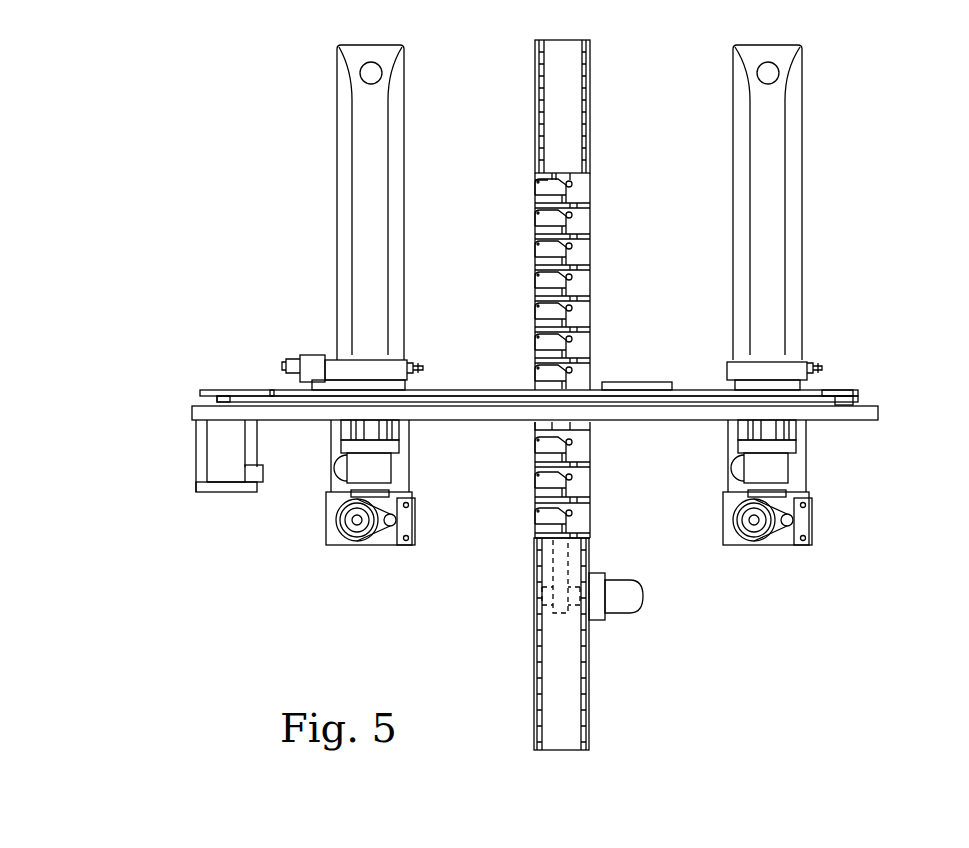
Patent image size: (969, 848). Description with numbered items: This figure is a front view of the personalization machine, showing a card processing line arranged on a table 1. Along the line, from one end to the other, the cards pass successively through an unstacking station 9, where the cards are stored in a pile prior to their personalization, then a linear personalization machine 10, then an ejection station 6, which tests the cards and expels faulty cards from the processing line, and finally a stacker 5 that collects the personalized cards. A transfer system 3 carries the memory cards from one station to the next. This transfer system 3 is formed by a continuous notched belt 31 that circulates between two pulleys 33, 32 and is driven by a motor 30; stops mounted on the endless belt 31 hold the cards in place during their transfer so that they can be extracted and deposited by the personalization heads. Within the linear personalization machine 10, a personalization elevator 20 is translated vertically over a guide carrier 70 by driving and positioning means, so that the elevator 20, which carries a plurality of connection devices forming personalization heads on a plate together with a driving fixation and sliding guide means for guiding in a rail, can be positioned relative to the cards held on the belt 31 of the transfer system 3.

The table 1 is at (878, 414).
The transfer system 3 is at (253, 390).
The stacker 5 is at (807, 530).
The ejection station 6 is at (642, 392).
The unstacking station 9 is at (343, 128).
The linear personalization machine 10 is at (567, 751).
The personalization elevator 20 is at (590, 205).
The motor 30 is at (205, 488).
The continuous notched belt 31 is at (272, 392).
The pulley 32 is at (838, 396).
The pulley 33 is at (220, 391).
The guide carrier 70 is at (535, 116).